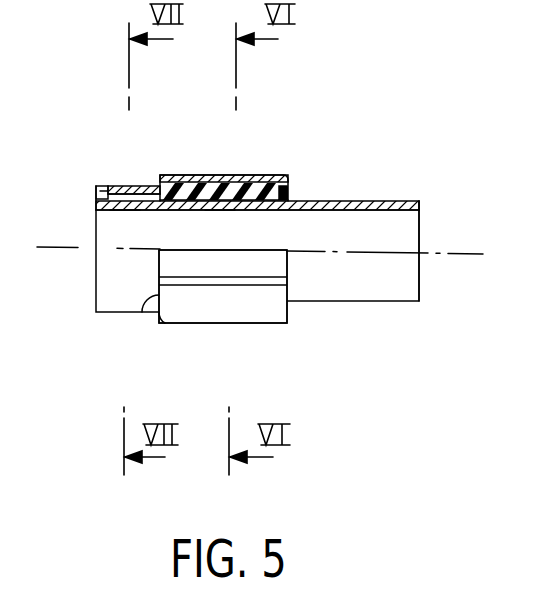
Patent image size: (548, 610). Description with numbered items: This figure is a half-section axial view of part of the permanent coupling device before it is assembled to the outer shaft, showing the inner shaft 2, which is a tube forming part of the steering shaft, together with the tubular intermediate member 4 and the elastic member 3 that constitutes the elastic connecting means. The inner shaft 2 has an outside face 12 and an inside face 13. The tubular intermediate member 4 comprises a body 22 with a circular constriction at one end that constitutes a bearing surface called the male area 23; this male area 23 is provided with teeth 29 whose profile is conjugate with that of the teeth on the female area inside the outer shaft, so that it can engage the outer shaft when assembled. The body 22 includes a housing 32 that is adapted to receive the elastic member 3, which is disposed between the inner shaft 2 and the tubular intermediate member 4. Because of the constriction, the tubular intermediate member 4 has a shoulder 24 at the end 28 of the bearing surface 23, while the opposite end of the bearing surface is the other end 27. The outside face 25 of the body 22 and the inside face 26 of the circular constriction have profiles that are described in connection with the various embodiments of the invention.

The inner shaft 2 is at (365, 196).
The elastic member 3 is at (252, 176).
The tubular intermediate member 4 is at (276, 168).
The outside face 12 is at (400, 201).
The inside face 13 is at (380, 212).
The body 22 is at (203, 175).
The male area 23 is at (118, 188).
The shoulder 24 is at (159, 180).
The outside face 25 is at (258, 325).
The inside face 26 is at (128, 210).
The other end of the bearing surface 27 is at (97, 188).
The end of the bearing surface 28 is at (145, 310).
The teeth 29 is at (140, 186).
The housing 32 is at (220, 211).